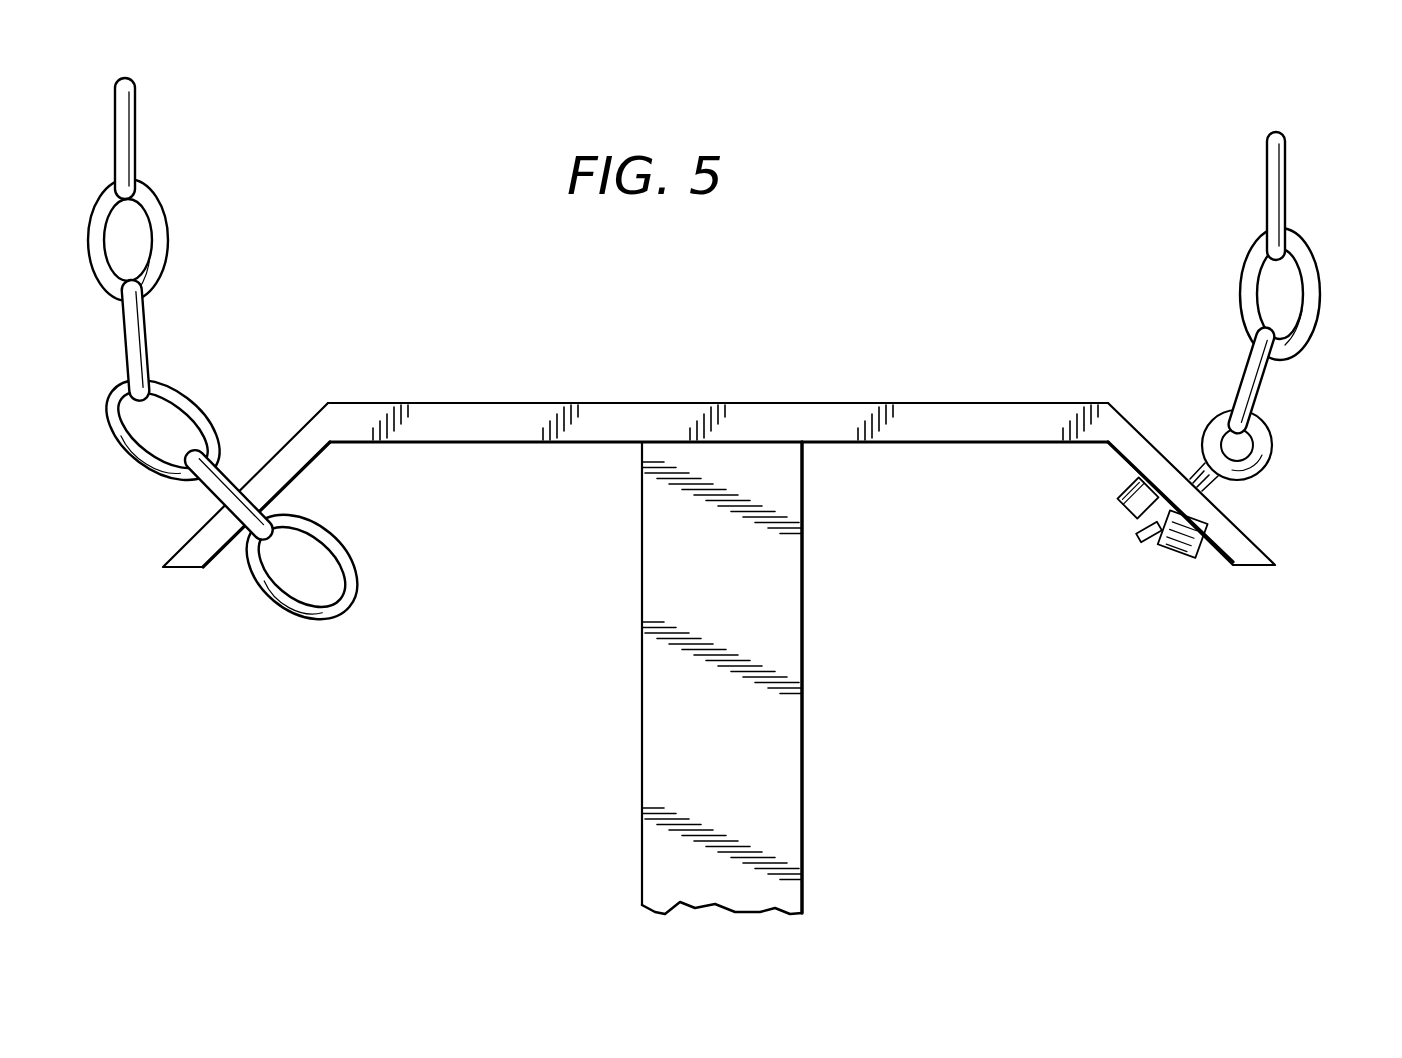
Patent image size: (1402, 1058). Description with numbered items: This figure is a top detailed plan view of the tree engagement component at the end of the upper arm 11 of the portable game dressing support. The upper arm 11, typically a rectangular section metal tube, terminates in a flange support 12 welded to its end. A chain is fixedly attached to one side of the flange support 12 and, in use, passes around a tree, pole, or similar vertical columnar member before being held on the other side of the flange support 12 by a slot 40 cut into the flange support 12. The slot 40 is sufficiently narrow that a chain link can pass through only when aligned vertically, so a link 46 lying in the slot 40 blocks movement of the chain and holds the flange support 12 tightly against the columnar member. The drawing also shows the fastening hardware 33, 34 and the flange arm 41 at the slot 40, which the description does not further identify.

The upper arm 11 is at (783, 637).
The flange support 12 is at (679, 429).
The nut 33 is at (1178, 565).
The eye bolt 34 is at (1270, 422).
The slot 40 is at (237, 490).
The bracket arm 41 is at (207, 487).
The link 46 is at (340, 627).